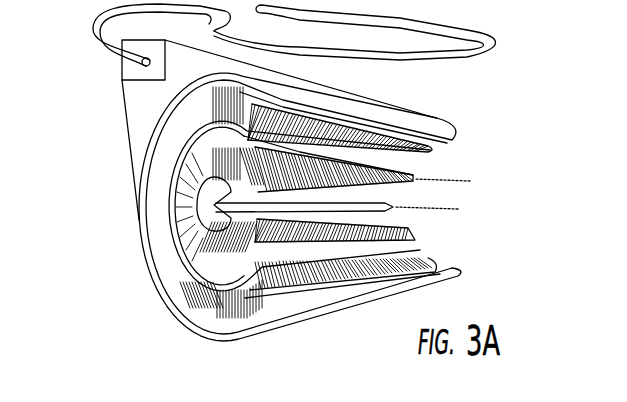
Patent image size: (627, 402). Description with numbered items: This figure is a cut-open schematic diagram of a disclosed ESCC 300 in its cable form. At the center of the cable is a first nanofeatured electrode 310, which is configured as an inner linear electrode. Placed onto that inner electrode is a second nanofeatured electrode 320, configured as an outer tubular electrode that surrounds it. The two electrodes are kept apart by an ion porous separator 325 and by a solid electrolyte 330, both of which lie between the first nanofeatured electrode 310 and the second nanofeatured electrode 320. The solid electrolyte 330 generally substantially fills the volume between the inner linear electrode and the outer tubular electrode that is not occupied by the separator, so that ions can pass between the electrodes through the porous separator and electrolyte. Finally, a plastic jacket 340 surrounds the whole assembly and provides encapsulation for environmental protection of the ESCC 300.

The ESCC 300 is at (110, 180).
The first nanofeatured electrode 310 is at (190, 212).
The second nanofeatured electrode 320 is at (200, 302).
The ion porous separator 325 is at (582, 135).
The solid electrolyte 330 is at (603, 269).
The plastic jacket 340 is at (320, 317).